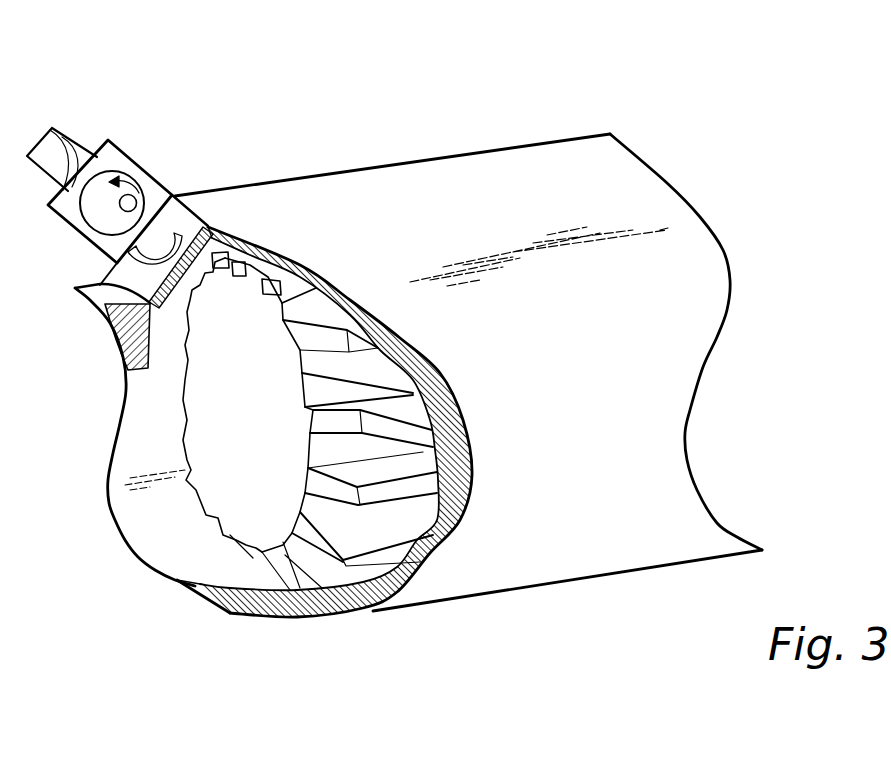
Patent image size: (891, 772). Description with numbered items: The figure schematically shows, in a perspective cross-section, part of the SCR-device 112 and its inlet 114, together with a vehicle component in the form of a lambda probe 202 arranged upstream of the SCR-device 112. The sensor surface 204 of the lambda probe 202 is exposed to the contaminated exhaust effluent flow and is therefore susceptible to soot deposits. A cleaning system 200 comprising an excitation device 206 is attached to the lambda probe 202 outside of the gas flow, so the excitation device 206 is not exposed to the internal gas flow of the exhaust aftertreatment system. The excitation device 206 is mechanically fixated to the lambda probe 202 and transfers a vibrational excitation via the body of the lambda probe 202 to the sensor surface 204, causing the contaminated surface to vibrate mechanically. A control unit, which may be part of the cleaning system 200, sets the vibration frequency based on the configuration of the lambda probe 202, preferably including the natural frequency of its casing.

The SCR-device 112 is at (535, 495).
The inlet 114 is at (170, 505).
The cleaning system 200 is at (148, 122).
The lambda probe 202 is at (147, 240).
The sensor surface 204 is at (217, 233).
The excitation device 206 is at (100, 173).